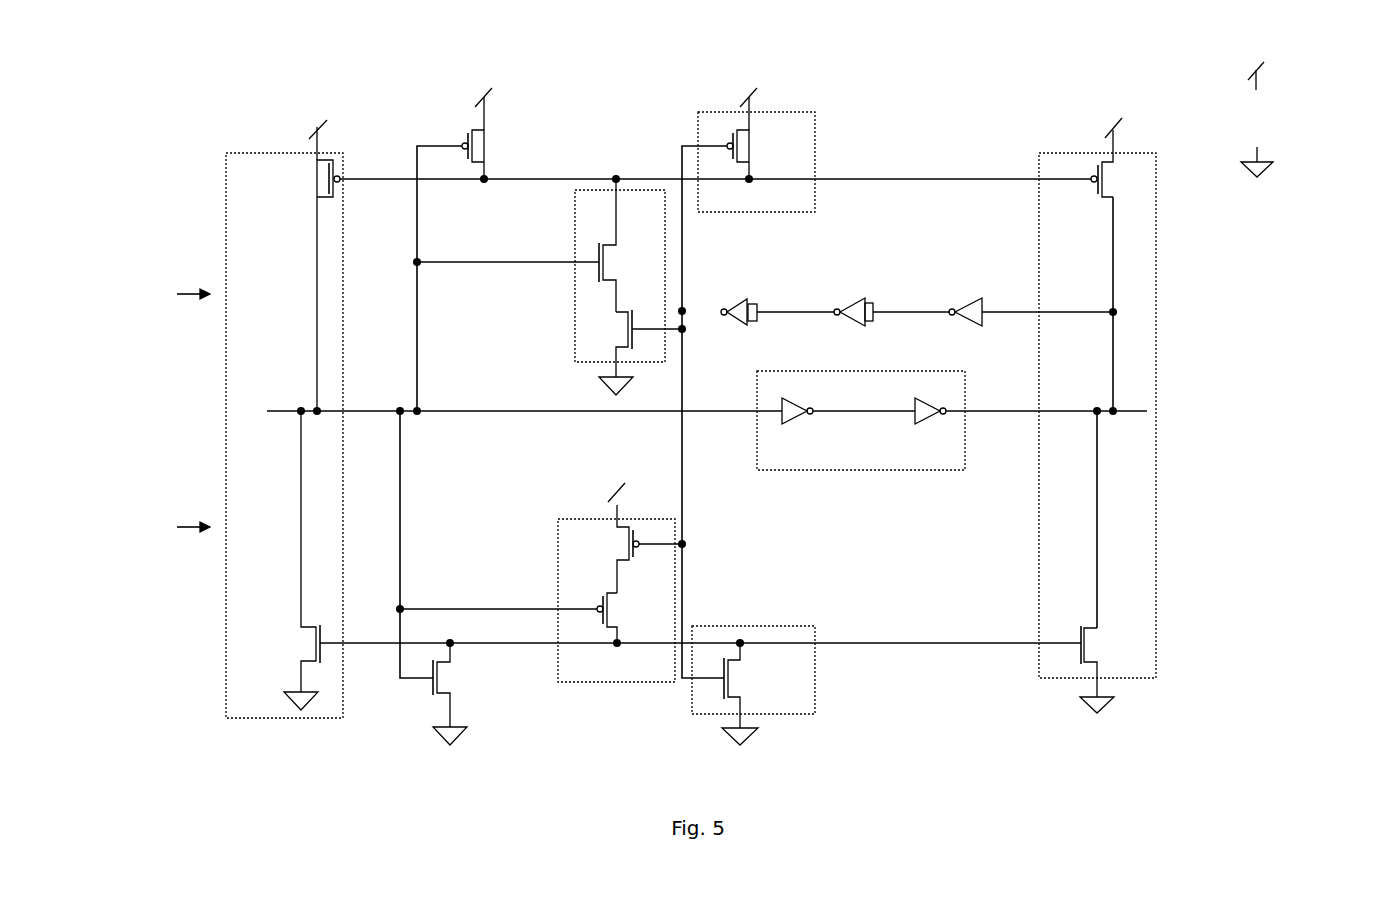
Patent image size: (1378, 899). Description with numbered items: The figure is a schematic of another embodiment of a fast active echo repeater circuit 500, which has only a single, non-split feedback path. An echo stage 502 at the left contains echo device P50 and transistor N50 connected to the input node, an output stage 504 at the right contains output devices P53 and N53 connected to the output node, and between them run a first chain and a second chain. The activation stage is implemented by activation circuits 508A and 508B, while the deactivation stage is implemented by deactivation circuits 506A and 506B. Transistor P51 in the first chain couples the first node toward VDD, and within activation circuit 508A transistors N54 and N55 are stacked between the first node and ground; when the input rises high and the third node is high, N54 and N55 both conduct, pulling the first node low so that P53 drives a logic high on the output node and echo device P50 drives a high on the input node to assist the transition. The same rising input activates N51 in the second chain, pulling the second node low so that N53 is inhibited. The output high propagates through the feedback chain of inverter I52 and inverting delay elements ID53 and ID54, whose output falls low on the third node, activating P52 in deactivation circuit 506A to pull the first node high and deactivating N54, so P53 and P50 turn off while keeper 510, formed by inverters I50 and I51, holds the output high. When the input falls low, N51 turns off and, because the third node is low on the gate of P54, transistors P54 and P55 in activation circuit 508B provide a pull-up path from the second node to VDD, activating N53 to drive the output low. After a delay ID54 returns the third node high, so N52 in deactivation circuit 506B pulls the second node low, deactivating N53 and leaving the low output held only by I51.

The fast active echo repeater circuit 500 is at (357, 40).
The echo stage 502 is at (318, 718).
The output stage 504 is at (1156, 678).
The deactivation circuit 506A is at (698, 112).
The deactivation circuit 506B is at (815, 714).
The activation circuit 508A is at (575, 247).
The activation circuit 508B is at (600, 682).
The keeper 510 is at (927, 526).
The echo device P50 is at (303, 265).
The transistor P51 is at (500, 133).
The transistor P52 is at (765, 133).
The output device P53 is at (1123, 157).
The transistor P54 is at (611, 538).
The transistor P55 is at (627, 618).
The transistor N50 is at (284, 560).
The transistor N51 is at (469, 694).
The transistor N52 is at (757, 694).
The output device N53 is at (1109, 669).
The transistor N54 is at (600, 352).
The transistor N55 is at (629, 245).
The inverter I50 is at (799, 429).
The inverter I51 is at (934, 429).
The inverter I52 is at (965, 297).
The inverting delay element ID53 is at (840, 297).
The inverting delay element ID54 is at (726, 296).